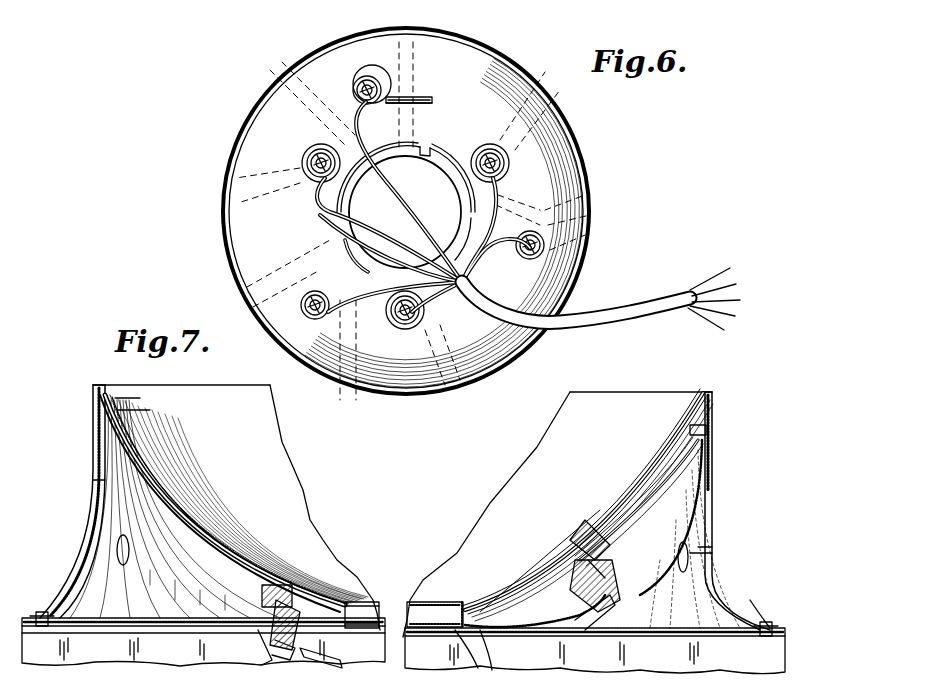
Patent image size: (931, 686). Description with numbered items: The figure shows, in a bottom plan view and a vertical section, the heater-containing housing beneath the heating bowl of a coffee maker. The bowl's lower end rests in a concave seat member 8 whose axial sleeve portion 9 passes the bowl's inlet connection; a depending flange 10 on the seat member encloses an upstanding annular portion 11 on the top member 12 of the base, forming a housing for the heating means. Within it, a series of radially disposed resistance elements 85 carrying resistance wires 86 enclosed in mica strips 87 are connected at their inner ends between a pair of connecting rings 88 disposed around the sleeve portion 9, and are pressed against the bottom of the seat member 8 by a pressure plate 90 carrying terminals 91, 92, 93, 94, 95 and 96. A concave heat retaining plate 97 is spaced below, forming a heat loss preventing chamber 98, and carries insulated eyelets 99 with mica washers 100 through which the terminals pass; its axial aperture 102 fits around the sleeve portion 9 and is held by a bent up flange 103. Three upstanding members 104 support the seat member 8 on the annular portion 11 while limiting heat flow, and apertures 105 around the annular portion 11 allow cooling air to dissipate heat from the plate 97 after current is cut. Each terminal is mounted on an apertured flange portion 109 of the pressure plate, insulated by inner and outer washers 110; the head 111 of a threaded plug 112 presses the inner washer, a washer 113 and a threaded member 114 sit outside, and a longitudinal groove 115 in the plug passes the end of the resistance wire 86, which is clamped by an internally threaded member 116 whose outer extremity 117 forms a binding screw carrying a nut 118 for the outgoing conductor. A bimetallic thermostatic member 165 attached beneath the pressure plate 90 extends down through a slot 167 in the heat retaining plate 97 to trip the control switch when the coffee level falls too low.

In FIG. 6, the seat member 8 is at (532, 92).
In FIG. 7, the seat member 8 is at (690, 470).
In FIG. 6, the axial sleeve portion 9 is at (413, 155).
In FIG. 7, the axial sleeve portion 9 is at (445, 602).
In FIG. 6, the depending flange 10 is at (588, 178).
In FIG. 7, the depending flange 10 is at (714, 420).
In FIG. 7, the upstanding annular portion 11 is at (714, 523).
In FIG. 7, the top member 12 is at (725, 628).
In FIG. 6, the resistance elements 85 is at (414, 36).
In FIG. 7, the resistance elements 85 is at (160, 456).
In FIG. 7, the resistance wires 86 is at (212, 520).
In FIG. 7, the mica strips 87 is at (130, 430).
In FIG. 7, the connecting rings 88 is at (480, 600).
In FIG. 7, the pressure plate 90 is at (678, 547).
In FIG. 6, the terminal 91 is at (302, 313).
In FIG. 6, the terminal 92 is at (305, 163).
In FIG. 6, the terminal 93 is at (358, 80).
In FIG. 6, the terminal 94 is at (510, 160).
In FIG. 6, the terminal 95 is at (546, 244).
In FIG. 6, the terminal 96 is at (410, 330).
In FIG. 6, the heat retaining plate 97 is at (563, 285).
In FIG. 7, the heat retaining plate 97 is at (715, 548).
In FIG. 7, the heat loss preventing chamber 98 is at (690, 510).
In FIG. 7, the insulated eyelets 99 is at (630, 598).
In FIG. 7, the mica washers 100 is at (260, 630).
In FIG. 7, the axial aperture 102 is at (462, 640).
In FIG. 6, the bent up flange 103 is at (368, 268).
In FIG. 7, the bent up flange 103 is at (495, 658).
In FIG. 7, the upstanding members 104 is at (108, 400).
In FIG. 7, the apertures 105 is at (115, 548).
In FIG. 7, the flange portions 109 is at (345, 603).
In FIG. 7, the insulating washers 110 is at (575, 588).
In FIG. 7, the head 111 is at (565, 560).
In FIG. 7, the threaded plug 112 is at (300, 598).
In FIG. 7, the washer 113 is at (578, 590).
In FIG. 7, the threaded member 114 is at (585, 600).
In FIG. 7, the longitudinal groove 115 is at (292, 600).
In FIG. 7, the internally threaded member 116 is at (296, 650).
In FIG. 7, the externally threaded outer extremity 117 is at (280, 662).
In FIG. 7, the nut 118 is at (258, 650).
In FIG. 6, the thermostatic member 165 is at (434, 105).
In FIG. 6, the slot 167 is at (432, 98).